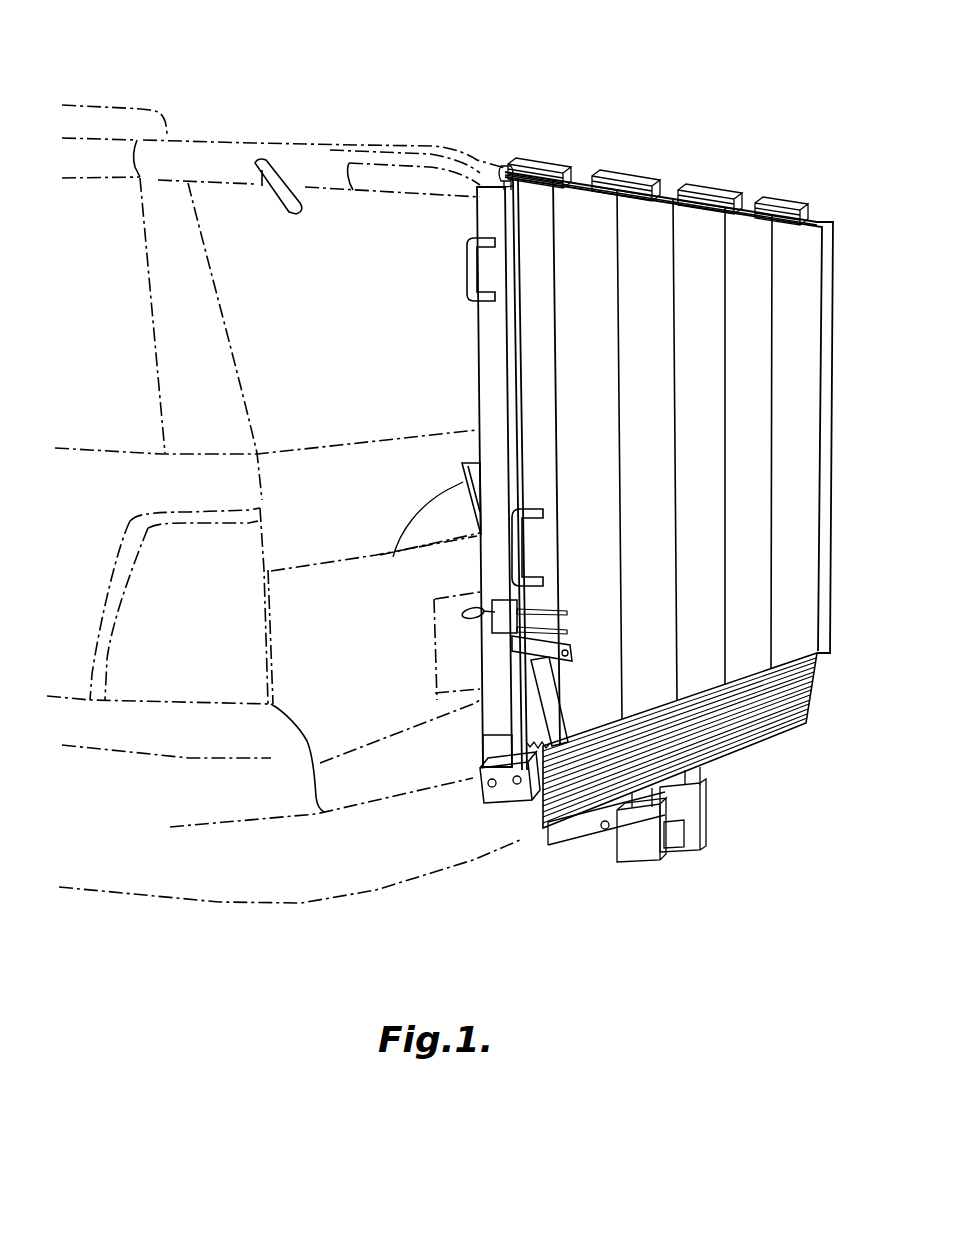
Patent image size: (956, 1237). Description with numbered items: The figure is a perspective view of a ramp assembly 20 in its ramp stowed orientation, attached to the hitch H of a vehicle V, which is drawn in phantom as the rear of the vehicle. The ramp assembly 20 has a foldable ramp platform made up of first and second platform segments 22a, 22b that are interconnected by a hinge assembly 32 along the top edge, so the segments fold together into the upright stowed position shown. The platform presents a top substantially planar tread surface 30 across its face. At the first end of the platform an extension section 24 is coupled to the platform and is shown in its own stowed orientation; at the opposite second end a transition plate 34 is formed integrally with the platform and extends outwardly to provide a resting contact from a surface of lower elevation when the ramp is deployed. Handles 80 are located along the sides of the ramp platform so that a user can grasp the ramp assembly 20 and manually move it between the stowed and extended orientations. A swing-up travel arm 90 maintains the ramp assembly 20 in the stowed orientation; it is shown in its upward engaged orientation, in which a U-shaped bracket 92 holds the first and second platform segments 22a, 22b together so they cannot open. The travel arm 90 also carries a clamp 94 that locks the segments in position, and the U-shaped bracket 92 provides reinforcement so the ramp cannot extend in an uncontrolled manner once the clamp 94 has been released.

The ramp assembly 20 is at (551, 523).
The platform segment 22a is at (480, 325).
The platform segment 22b is at (545, 258).
The extension section 24 is at (393, 557).
The tread surface 30 is at (713, 431).
The hinge assembly 32 is at (540, 158).
The transition plate 34 is at (738, 738).
The handles 80 is at (467, 250).
The swing-up travel arm 90 is at (492, 736).
The U-shaped bracket 92 is at (532, 640).
The clamp 94 is at (482, 626).
The vehicle V is at (227, 812).
The hitch H is at (610, 855).